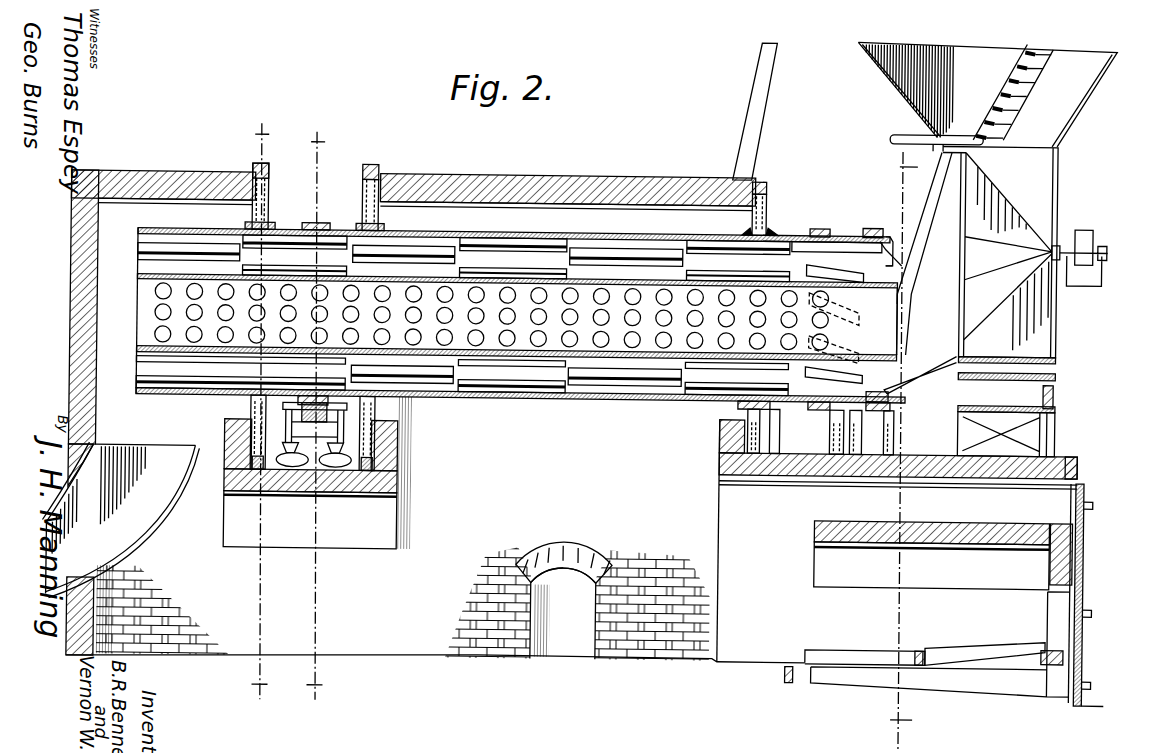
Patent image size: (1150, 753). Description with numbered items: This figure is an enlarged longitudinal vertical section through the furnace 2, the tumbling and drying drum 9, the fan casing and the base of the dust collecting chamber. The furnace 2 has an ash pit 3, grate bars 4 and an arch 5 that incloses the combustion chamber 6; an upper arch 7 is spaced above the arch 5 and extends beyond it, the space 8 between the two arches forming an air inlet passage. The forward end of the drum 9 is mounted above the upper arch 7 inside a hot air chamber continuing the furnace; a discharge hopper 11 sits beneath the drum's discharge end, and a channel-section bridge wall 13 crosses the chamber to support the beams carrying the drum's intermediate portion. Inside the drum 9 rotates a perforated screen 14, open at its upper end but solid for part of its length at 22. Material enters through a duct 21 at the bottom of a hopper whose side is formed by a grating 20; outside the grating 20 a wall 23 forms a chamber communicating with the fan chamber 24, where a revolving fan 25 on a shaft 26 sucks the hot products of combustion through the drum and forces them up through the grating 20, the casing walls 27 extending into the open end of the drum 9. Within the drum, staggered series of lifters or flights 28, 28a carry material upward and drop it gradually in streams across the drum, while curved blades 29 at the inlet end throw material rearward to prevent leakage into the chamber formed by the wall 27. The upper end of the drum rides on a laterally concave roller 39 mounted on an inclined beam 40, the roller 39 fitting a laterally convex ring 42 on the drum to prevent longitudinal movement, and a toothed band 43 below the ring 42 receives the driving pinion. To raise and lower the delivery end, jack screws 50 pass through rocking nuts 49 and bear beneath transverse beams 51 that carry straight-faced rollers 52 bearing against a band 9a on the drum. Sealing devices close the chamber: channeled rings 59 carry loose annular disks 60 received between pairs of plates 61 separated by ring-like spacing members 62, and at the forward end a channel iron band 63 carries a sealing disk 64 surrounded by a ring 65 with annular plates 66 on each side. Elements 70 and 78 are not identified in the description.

The furnace 2 is at (864, 638).
The ash pit 3 is at (929, 451).
The grate bars 4 is at (975, 648).
The arch 5 is at (960, 542).
The combustion chamber 6 is at (1008, 580).
The upper arch 7 is at (932, 474).
The space 8 is at (1050, 581).
The tumbling and drying drum 9 is at (718, 236).
The band 9a is at (314, 226).
The discharge hopper 11 is at (118, 554).
The bridge wall 13 is at (376, 466).
The screen 14 is at (582, 398).
The grating 20 is at (1022, 62).
The duct 21 is at (905, 282).
The solid portion of screen 22 is at (876, 328).
The wall 23 is at (987, 94).
The fan chamber 24 is at (1058, 206).
The fan 25 is at (1035, 186).
The shaft 26 is at (1106, 250).
The walls of fan casing 27 is at (907, 235).
The lifters or flights 28 is at (602, 250).
The lifters or flights 28a is at (548, 248).
The curved blades or lifters 29 is at (836, 238).
The roller 39 is at (872, 420).
The inclined beam 40 is at (792, 484).
The ring 42 is at (877, 223).
The toothed band or ring 43 is at (819, 222).
The rocking nuts 49 is at (327, 475).
The jack screw 50 is at (283, 456).
The transverse beams 51 is at (288, 422).
The roller 52 is at (326, 398).
The rings 59 is at (382, 229).
The annular sealing disks 60 is at (268, 203).
The plates 61 is at (362, 180).
The spacing members 62 is at (378, 172).
The channel iron band 63 is at (776, 230).
The sealing disk 64 is at (768, 200).
The ring 65 is at (760, 180).
The annular plates 66 is at (770, 216).
The top wall 70 is at (420, 190).
The hopper contents 78 is at (916, 91).